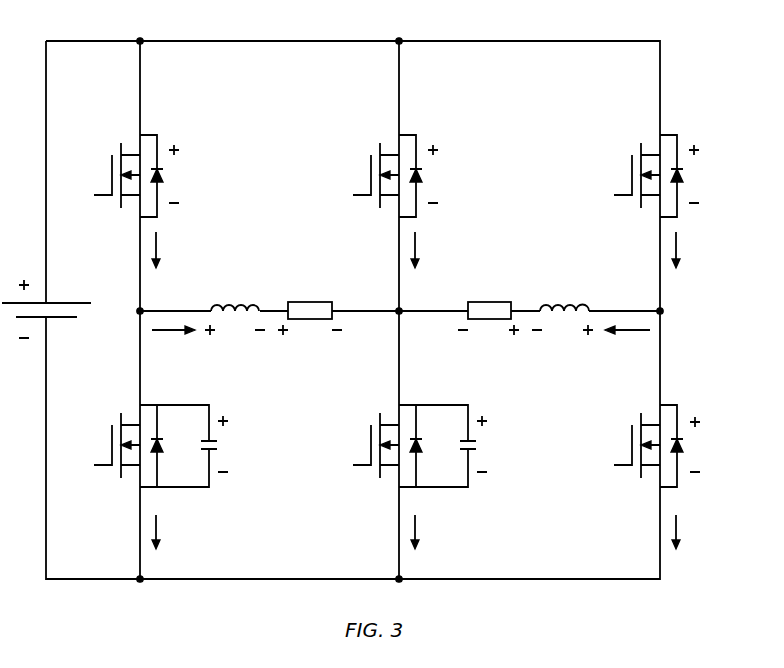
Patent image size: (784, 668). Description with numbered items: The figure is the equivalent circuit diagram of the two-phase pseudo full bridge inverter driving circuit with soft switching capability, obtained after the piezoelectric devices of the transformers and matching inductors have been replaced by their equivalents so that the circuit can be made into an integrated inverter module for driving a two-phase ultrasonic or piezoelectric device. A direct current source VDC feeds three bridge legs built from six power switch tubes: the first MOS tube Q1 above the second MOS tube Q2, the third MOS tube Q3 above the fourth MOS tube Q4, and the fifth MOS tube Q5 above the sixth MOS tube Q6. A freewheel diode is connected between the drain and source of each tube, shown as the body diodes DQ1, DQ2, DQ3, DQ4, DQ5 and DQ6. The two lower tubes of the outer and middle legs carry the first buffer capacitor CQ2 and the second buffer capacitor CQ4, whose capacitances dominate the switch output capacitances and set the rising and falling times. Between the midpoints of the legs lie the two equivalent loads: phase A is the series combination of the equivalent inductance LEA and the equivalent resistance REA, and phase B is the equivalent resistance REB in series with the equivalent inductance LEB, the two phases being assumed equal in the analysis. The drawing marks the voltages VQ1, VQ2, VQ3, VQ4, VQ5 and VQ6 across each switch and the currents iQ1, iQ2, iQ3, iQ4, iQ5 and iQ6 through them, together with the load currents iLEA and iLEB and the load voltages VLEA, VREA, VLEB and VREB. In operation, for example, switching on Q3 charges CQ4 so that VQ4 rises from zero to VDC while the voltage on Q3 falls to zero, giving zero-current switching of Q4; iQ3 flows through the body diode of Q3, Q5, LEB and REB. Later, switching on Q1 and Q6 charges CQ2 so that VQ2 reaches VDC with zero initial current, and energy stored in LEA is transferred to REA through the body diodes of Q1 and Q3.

The direct current voltage VDC is at (47, 304).
The first MOS tube Q1 is at (107, 175).
The second MOS tube Q2 is at (107, 445).
The third MOS tube Q3 is at (366, 175).
The fourth MOS tube Q4 is at (366, 445).
The fifth MOS tube Q5 is at (627, 175).
The sixth MOS tube Q6 is at (627, 445).
The body diode of Q1 DQ1 is at (165, 161).
The body diode of Q2 DQ2 is at (165, 431).
The body diode of Q3 DQ3 is at (424, 161).
The body diode of Q4 DQ4 is at (424, 431).
The body diode of Q5 DQ5 is at (685, 161).
The body diode of Q6 DQ6 is at (685, 431).
The first buffer capacitor CQ2 is at (187, 446).
The second buffer capacitor CQ4 is at (446, 446).
The equivalent inductance of phase A LEA is at (235, 292).
The equivalent resistance of phase A REA is at (310, 296).
The equivalent inductance of phase B LEB is at (564, 292).
The equivalent resistance of phase B REB is at (489, 296).
The voltage across Q1 VQ1 is at (195, 174).
The voltage across Q2 VQ2 is at (244, 444).
The voltage across Q3 VQ3 is at (454, 174).
The voltage across Q4 VQ4 is at (503, 444).
The voltage across Q5 VQ5 is at (715, 174).
The voltage across Q6 VQ6 is at (715, 444).
The current of Q1 iQ1 is at (172, 252).
The current of Q2 iQ2 is at (172, 534).
The current of Q3 iQ3 is at (431, 252).
The current of Q4 iQ4 is at (431, 534).
The current of Q5 iQ5 is at (692, 252).
The current of Q6 iQ6 is at (692, 534).
The load current of phase A iLEA is at (173, 350).
The load current of phase B iLEB is at (627, 350).
The voltage across LEA VLEA is at (235, 349).
The voltage across REA VREA is at (310, 349).
The voltage across LEB VLEB is at (562, 349).
The voltage across REB VREB is at (488, 349).